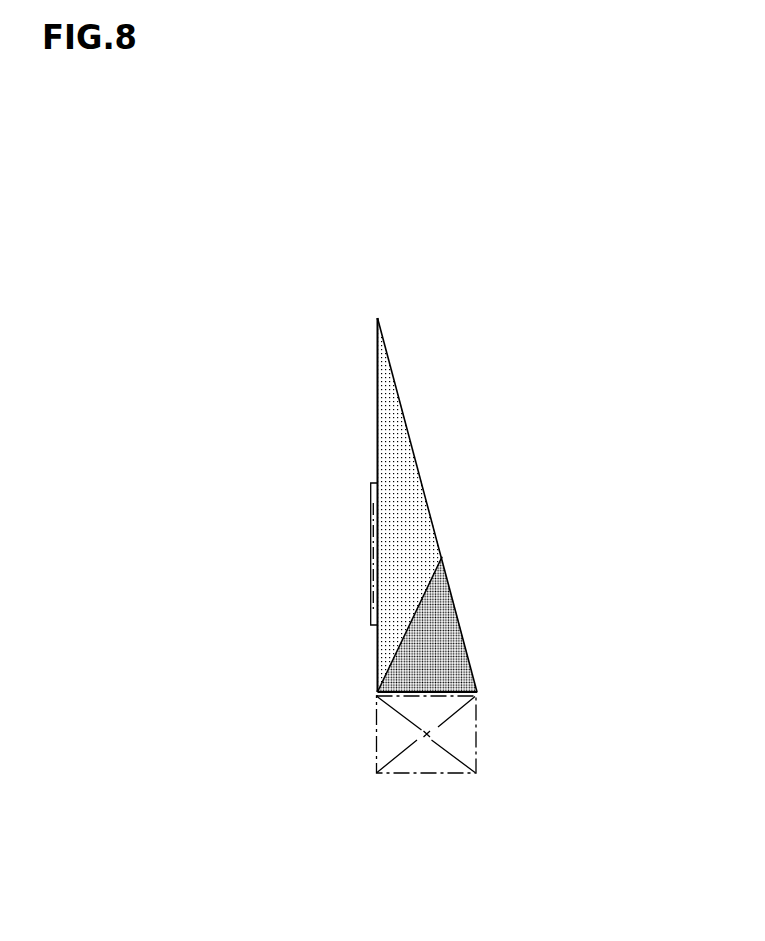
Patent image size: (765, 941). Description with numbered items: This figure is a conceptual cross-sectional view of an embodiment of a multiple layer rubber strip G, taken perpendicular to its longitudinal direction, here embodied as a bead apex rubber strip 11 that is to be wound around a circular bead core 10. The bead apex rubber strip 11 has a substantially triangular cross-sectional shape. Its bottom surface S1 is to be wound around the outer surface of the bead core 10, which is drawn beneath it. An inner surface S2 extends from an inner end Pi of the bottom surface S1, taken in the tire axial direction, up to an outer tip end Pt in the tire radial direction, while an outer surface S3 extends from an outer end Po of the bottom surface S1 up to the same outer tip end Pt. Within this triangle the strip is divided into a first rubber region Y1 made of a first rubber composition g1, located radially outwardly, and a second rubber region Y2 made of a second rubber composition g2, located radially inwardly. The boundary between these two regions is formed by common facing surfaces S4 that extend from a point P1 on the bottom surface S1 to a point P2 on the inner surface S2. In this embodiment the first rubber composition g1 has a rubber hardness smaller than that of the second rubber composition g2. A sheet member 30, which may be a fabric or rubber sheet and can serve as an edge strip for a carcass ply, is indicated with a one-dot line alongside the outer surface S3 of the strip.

The multiple layer rubber strip G is at (426, 555).
The bead apex rubber strip 11 is at (325, 382).
The first rubber region Y1 is at (502, 505).
The first rubber composition g1 is at (397, 480).
The second rubber region Y2 is at (514, 625).
The second rubber composition g2 is at (431, 645).
The bottom surface S1 is at (437, 695).
The inner surface S2 is at (402, 403).
The outer surface S3 is at (376, 507).
The common facing surfaces S4 is at (407, 623).
The outer tip end Pt is at (378, 318).
The point on the bottom surface P1 is at (372, 691).
The point on the inner surface P2 is at (445, 556).
The inner end of the bottom surface Pi is at (480, 693).
The outer end of the bottom surface Po is at (368, 698).
The sheet member 30 is at (370, 557).
The bead core 10 is at (403, 773).